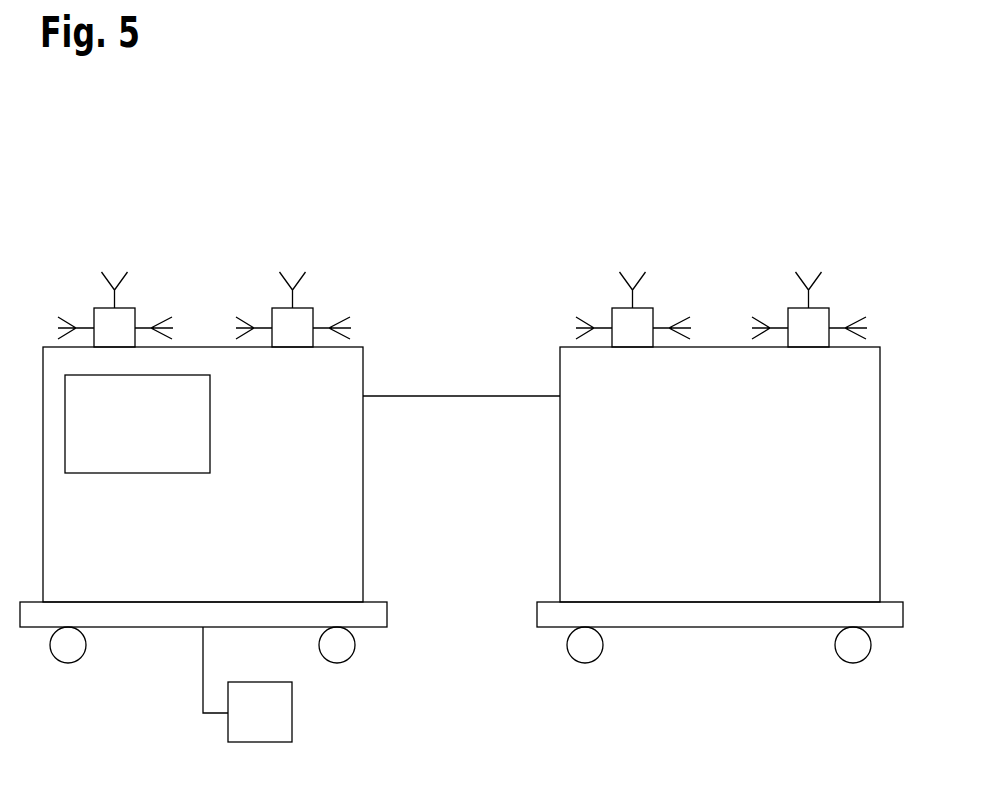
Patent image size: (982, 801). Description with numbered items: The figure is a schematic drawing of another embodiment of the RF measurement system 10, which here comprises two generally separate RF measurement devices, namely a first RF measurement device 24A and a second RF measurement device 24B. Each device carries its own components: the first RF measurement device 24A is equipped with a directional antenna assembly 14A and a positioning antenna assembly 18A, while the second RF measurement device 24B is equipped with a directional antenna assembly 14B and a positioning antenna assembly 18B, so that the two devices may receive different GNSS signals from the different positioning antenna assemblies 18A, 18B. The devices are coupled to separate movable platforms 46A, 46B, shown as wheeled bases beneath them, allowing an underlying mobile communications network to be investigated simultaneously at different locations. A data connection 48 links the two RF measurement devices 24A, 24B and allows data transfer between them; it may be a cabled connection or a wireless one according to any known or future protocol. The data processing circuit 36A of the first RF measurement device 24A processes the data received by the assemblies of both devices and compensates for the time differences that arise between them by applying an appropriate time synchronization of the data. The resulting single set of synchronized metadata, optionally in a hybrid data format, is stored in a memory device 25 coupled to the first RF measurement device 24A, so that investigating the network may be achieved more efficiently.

The RF measurement system 10 is at (482, 164).
The directional antenna assembly 14A is at (127, 308).
The directional antenna assembly 14B is at (640, 308).
The positioning antenna assembly 18A is at (302, 308).
The positioning antenna assembly 18B is at (813, 308).
The first RF measurement device 24A is at (363, 438).
The second RF measurement device 24B is at (560, 522).
The memory device 25 is at (292, 713).
The data processing circuit 36A is at (182, 375).
The movable platform 46A is at (143, 627).
The movable platform 46B is at (722, 627).
The data connection 48 is at (450, 396).